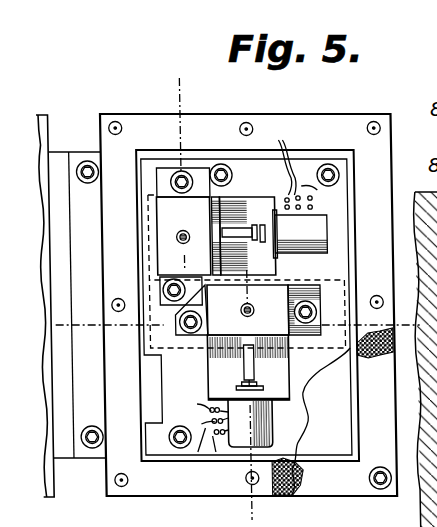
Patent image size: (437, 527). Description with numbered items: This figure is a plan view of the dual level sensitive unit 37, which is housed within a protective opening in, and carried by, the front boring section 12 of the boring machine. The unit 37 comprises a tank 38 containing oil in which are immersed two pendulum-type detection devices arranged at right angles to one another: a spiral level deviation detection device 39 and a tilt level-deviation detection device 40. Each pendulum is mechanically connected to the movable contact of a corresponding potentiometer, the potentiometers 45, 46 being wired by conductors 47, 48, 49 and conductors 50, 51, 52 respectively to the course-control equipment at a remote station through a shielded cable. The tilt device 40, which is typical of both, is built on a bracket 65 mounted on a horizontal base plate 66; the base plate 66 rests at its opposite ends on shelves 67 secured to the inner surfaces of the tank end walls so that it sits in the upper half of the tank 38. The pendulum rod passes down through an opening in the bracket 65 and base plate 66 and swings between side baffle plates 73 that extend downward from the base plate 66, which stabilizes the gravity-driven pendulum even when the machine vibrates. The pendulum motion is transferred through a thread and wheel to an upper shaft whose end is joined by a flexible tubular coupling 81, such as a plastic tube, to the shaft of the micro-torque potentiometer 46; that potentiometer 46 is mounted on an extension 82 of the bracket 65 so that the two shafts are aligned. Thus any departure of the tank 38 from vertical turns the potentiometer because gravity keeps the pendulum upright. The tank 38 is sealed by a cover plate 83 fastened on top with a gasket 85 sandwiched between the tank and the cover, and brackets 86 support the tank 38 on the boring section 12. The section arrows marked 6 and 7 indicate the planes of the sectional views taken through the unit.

The section line 6- 6 is at (74, 310).
The section line 7- 7 is at (166, 97).
The front boring section 12 is at (50, 463).
The dual level sensitive unit 37 is at (322, 106).
The tank 38 is at (273, 124).
The spiral level deviation detection device 39 is at (158, 236).
The tilt level-deviation detection device 40 is at (197, 358).
The potentiometer 45 is at (310, 230).
The potentiometer 46 is at (259, 421).
The conductor 47 is at (287, 184).
The conductor 48 is at (274, 161).
The conductor 49 is at (314, 200).
The conductor 50 is at (200, 412).
The conductor 51 is at (195, 453).
The conductor 52 is at (215, 453).
The bracket 65 is at (283, 292).
The base plate 66 is at (250, 169).
The shelf 67 is at (291, 156).
The side baffle plate 73 is at (347, 277).
The flexible tubular coupling 81 is at (286, 358).
The extension of the bracket 82 is at (283, 377).
The cover plate 83 is at (339, 471).
The gasket 85 is at (292, 484).
The bracket 86 is at (58, 162).